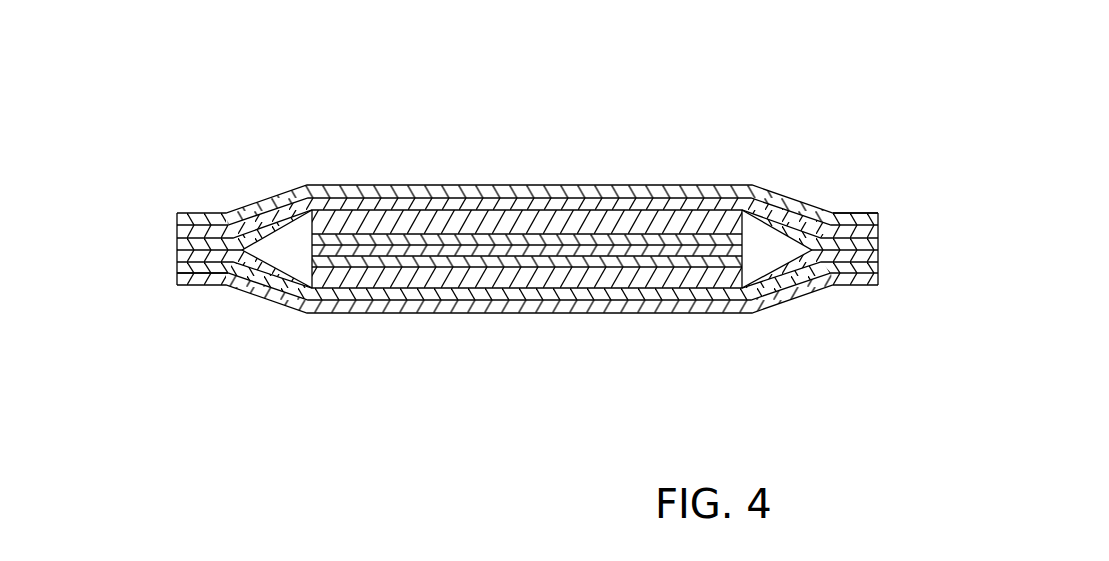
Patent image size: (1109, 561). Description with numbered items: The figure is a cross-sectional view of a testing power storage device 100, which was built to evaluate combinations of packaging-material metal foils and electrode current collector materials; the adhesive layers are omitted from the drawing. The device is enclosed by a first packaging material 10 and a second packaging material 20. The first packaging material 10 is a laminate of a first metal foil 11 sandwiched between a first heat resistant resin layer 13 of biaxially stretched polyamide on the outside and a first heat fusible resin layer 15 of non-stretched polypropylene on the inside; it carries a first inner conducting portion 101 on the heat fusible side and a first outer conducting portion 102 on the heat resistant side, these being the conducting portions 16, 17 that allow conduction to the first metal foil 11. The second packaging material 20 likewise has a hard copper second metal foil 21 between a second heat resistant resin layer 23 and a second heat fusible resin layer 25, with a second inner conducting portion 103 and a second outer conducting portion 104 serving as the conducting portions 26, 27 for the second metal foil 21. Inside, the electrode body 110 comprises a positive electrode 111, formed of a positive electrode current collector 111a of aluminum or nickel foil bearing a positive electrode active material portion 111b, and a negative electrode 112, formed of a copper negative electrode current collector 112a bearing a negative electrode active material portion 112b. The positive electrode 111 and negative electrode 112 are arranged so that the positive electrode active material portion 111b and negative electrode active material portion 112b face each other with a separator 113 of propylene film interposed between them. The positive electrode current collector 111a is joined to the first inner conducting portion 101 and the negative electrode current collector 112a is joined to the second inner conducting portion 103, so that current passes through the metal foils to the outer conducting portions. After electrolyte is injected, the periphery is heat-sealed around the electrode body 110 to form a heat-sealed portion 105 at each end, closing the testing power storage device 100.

The testing power storage device 100 is at (787, 101).
The first packaging material 10 is at (191, 266).
The first metal foil 11 is at (177, 270).
The first heat resistant resin layer 13 is at (172, 297).
The first heat fusible resin layer 15 is at (178, 253).
The conducting portion 16 is at (203, 278).
The conducting portion 17 is at (452, 291).
The second packaging material 20 is at (866, 234).
The second metal foil 21 is at (879, 232).
The second heat resistant resin layer 23 is at (878, 216).
The second heat fusible resin layer 25 is at (842, 267).
The conducting portion 26 is at (856, 226).
The conducting portion 27 is at (438, 211).
The first inner conducting portion 101 is at (527, 358).
The first outer conducting portion 102 is at (502, 332).
The second inner conducting portion 103 is at (527, 151).
The second outer conducting portion 104 is at (555, 172).
The heat-sealed portion 105 is at (192, 213).
The electrode body 110 is at (507, 253).
The positive electrode 111 is at (527, 354).
The positive electrode current collector 111a is at (713, 396).
The positive electrode active material portion 111b is at (660, 261).
The negative electrode 112 is at (527, 150).
The negative electrode current collector 112a is at (594, 216).
The negative electrode active material portion 112b is at (652, 239).
The separator 113 is at (385, 249).